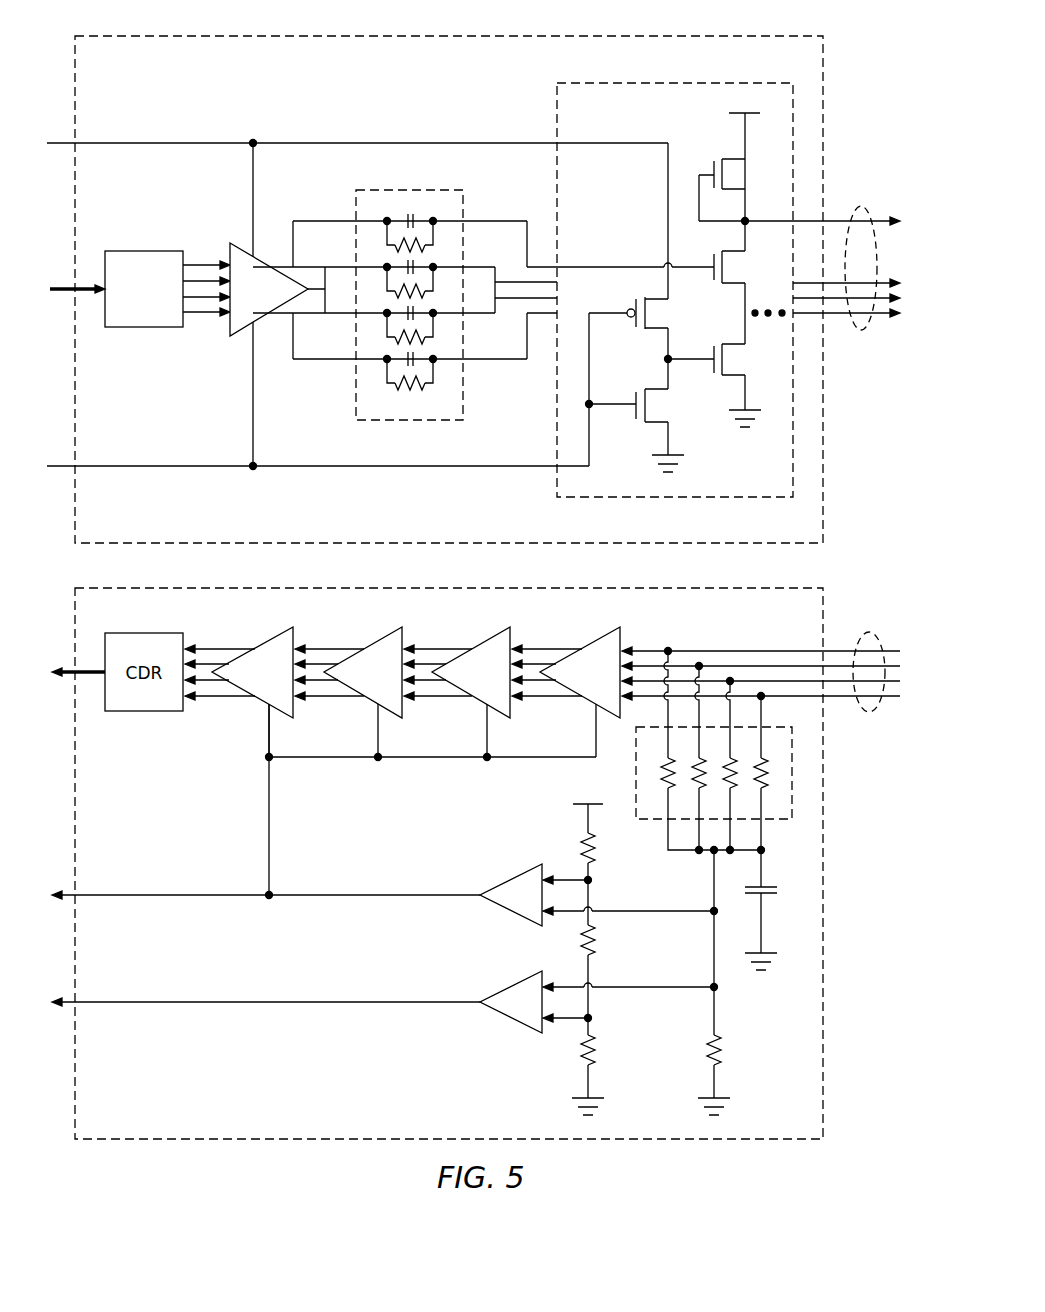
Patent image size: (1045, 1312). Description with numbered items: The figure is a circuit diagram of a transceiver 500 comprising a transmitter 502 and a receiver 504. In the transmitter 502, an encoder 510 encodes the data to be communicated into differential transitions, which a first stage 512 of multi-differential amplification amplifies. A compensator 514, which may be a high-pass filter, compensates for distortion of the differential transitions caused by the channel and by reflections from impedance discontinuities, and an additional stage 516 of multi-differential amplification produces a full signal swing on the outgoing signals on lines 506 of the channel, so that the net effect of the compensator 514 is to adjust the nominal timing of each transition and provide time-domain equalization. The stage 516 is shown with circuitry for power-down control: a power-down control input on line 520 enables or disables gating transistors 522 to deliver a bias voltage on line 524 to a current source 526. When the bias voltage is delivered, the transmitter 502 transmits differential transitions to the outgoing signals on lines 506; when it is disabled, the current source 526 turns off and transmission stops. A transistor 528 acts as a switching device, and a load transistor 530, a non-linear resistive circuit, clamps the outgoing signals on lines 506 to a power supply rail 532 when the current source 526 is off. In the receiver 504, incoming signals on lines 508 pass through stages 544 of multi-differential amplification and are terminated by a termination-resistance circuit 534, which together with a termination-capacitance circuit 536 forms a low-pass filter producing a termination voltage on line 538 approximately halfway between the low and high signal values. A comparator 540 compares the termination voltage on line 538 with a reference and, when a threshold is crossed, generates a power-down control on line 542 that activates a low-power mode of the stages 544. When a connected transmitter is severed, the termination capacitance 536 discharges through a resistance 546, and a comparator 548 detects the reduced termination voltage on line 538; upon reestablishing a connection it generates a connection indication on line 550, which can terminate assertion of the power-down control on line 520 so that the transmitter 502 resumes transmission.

The transceiver 500 is at (778, 1155).
The transmitter 502 is at (112, 545).
The receiver 504 is at (112, 1141).
The lines of outgoing signals 506 is at (866, 207).
The lines of incoming signals 508 is at (867, 633).
The encoder 510 is at (150, 251).
The first stage of multi-differential amplification 512 is at (232, 243).
The compensator 514 is at (422, 189).
The additional stage of multi-differential amplification 516 is at (627, 82).
The power-down control line 520 is at (107, 468).
The gating transistors 522 is at (658, 298).
The bias voltage line 524 is at (107, 145).
The current source 526 is at (728, 343).
The transistor 528 is at (728, 252).
The load transistor 530 is at (728, 160).
The power supply rail 532 is at (727, 113).
The termination-resistance circuit 534 is at (774, 821).
The termination-capacitance circuit 536 is at (777, 895).
The termination voltage line 538 is at (714, 963).
The comparator 540 is at (508, 878).
The power-down control line 542 is at (107, 897).
The stages of multi-differential amplification 544 is at (272, 638).
The resistance 546 is at (707, 1048).
The comparator 548 is at (508, 985).
The connection indication line 550 is at (107, 1004).